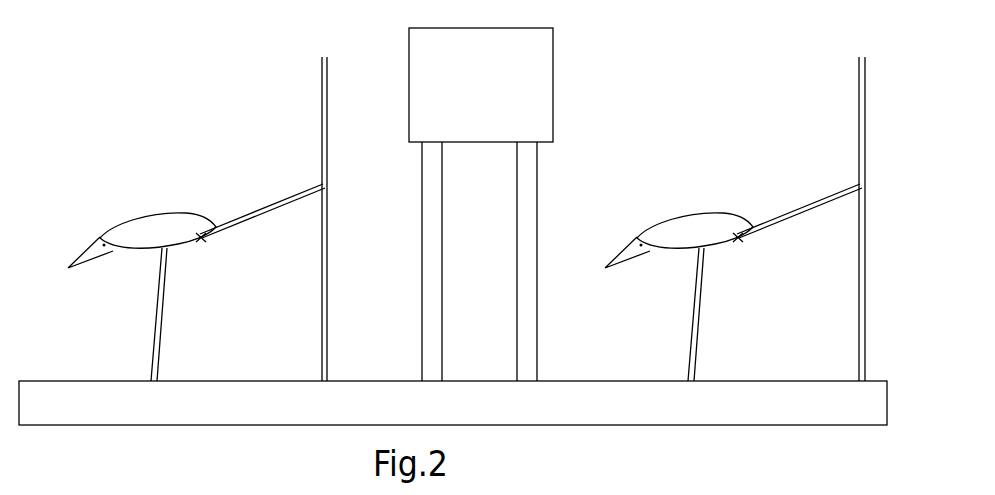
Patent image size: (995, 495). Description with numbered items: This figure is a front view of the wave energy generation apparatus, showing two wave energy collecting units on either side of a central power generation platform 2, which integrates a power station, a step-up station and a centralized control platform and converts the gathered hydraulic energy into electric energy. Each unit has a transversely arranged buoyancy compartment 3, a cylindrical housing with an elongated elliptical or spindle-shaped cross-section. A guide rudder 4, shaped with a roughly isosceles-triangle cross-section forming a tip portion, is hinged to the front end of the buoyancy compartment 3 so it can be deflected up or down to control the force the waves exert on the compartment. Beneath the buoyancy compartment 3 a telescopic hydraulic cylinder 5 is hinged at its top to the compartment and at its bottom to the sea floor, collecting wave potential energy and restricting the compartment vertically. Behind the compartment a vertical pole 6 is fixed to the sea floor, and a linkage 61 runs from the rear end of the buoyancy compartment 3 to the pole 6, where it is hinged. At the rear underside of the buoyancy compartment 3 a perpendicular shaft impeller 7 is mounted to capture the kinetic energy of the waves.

The power generation platform 2 is at (549, 75).
The buoyancy compartment 3 is at (153, 218).
The guide rudder 4 is at (83, 252).
The hydraulic cylinder 5 is at (157, 303).
The pole 6 is at (322, 107).
The linkage 61 is at (260, 206).
The perpendicular shaft impeller 7 is at (203, 243).